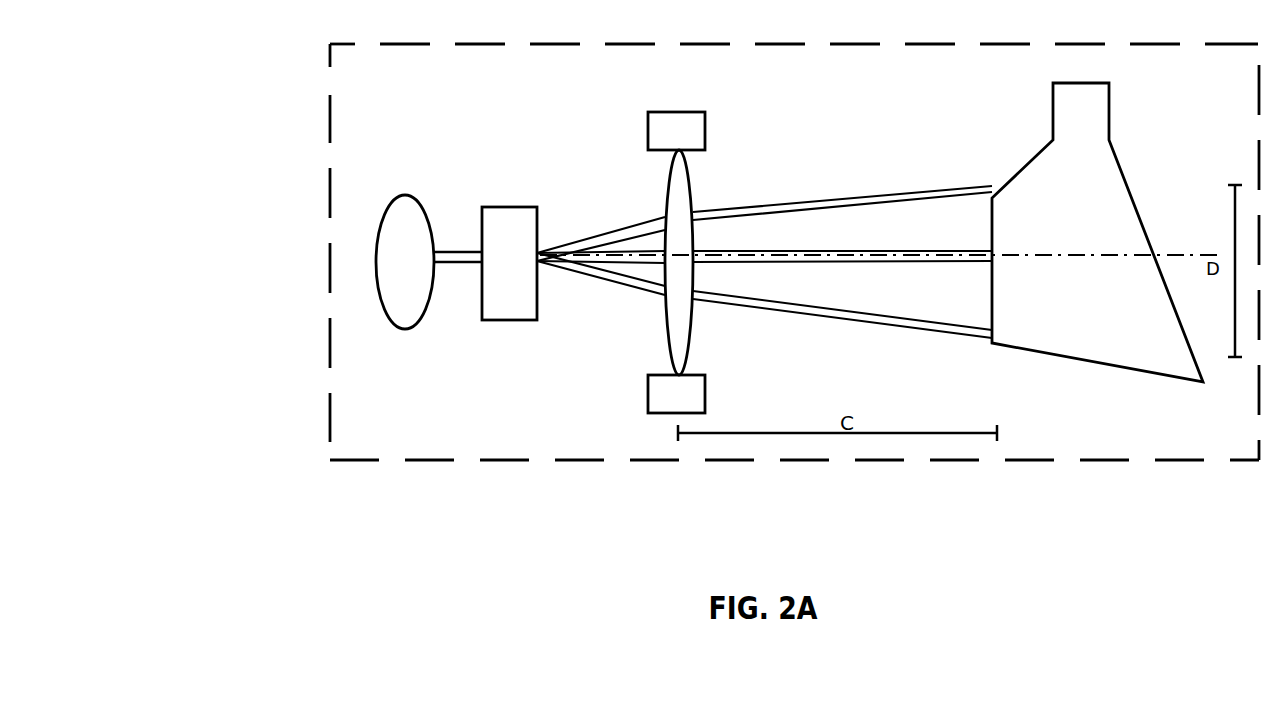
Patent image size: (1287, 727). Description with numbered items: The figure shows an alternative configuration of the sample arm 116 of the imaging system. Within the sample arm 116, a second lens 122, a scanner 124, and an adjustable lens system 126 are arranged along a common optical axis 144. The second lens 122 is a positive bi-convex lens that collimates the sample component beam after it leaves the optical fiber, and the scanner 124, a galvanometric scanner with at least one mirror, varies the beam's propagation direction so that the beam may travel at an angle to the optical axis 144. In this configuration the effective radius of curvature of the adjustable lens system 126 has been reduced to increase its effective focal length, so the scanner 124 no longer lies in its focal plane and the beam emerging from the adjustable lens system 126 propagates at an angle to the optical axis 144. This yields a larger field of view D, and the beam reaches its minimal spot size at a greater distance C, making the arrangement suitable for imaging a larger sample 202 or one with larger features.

The sample arm 116 is at (363, 460).
The second lens 122 is at (425, 207).
The scanner 124 is at (537, 210).
The adjustable lens system 126 is at (690, 200).
The optical axis 144 is at (1185, 253).
The sample 202 is at (1053, 100).